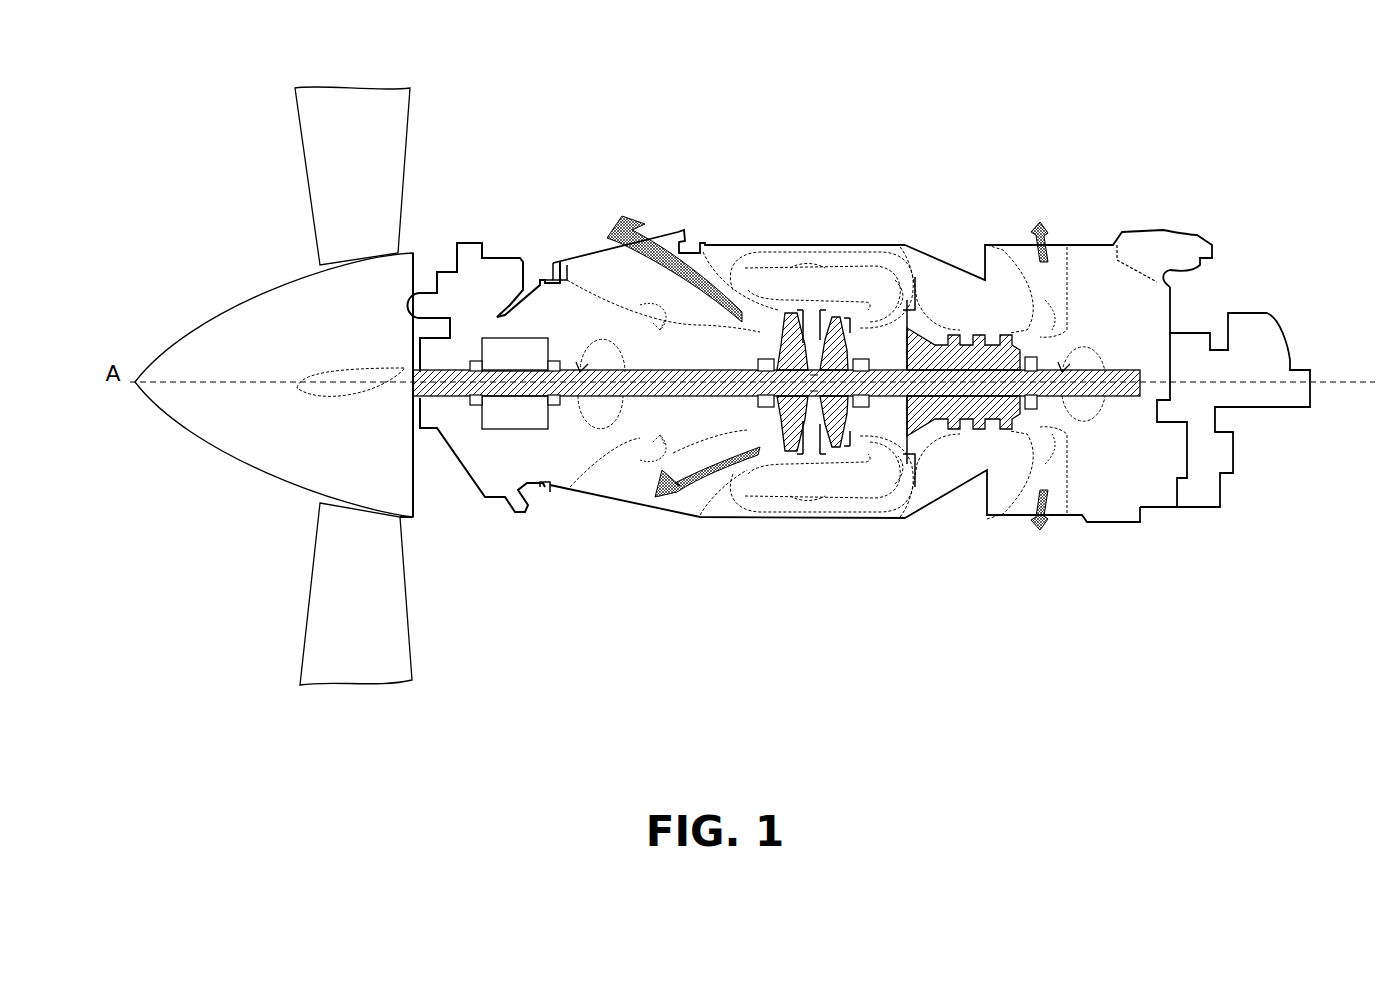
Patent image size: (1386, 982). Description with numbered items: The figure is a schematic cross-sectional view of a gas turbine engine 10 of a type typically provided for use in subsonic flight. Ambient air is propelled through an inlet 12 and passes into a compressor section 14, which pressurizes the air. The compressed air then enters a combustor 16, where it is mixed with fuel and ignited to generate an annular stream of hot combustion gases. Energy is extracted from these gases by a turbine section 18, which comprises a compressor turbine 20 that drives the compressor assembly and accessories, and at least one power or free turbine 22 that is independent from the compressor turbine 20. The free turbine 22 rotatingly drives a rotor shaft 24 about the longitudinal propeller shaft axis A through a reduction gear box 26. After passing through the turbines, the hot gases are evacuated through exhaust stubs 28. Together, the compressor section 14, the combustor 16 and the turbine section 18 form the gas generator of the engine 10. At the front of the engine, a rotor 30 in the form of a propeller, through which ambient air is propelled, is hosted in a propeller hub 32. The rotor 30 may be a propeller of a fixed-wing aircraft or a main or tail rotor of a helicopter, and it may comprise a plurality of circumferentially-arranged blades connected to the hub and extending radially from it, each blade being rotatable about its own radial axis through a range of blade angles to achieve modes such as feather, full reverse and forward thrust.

The gas turbine engine 10 is at (737, 165).
The inlet 12 is at (1042, 231).
The compressor section 14 is at (945, 283).
The combustor 16 is at (850, 272).
The turbine section 18 is at (817, 393).
The compressor turbine 20 is at (835, 385).
The power or free turbine 22 is at (812, 382).
The rotor shaft 24 is at (533, 420).
The reduction gear box 26 is at (517, 380).
The exhaust stubs 28 is at (603, 228).
The rotor 30 is at (323, 153).
The propeller hub 32 is at (255, 305).